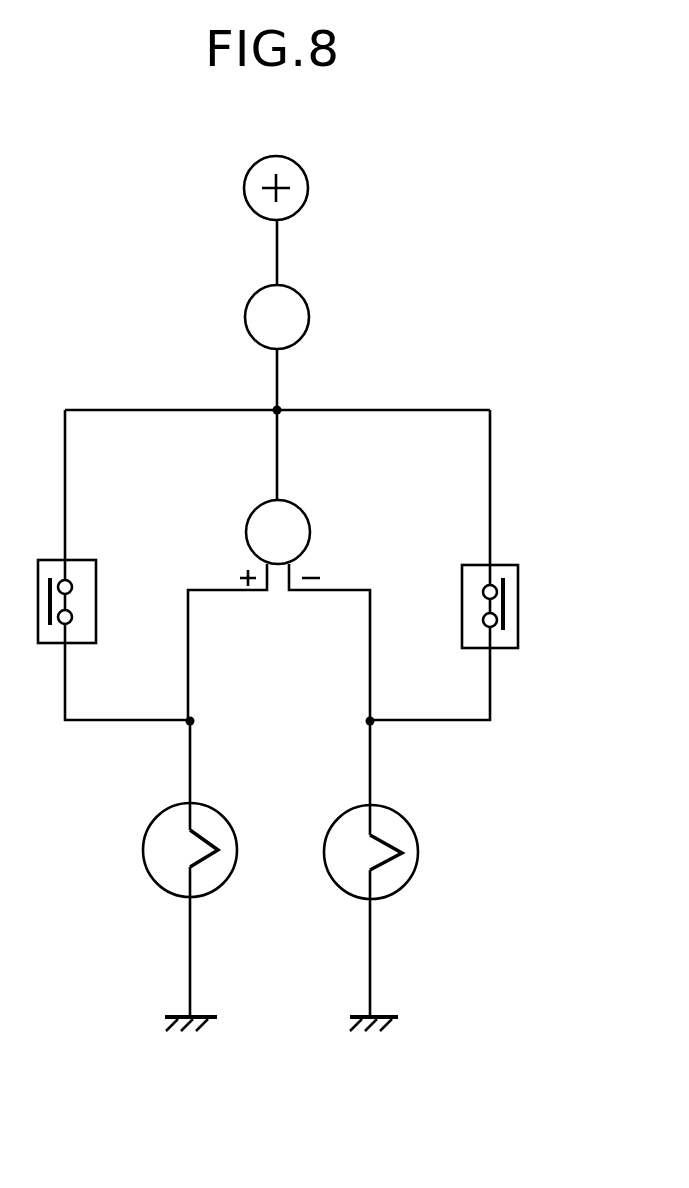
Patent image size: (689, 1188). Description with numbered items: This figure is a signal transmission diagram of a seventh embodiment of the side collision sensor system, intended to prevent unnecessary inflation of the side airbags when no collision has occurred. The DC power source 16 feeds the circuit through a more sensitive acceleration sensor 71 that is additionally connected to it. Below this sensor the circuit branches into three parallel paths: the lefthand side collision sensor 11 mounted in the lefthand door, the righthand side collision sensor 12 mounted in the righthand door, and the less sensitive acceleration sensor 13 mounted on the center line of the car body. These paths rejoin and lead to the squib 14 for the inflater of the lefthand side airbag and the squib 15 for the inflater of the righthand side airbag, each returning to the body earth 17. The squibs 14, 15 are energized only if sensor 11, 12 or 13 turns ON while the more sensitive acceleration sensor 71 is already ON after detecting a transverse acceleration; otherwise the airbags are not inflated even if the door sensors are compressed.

The DC power source 16 is at (300, 172).
The more sensitive acceleration sensor 71 is at (308, 318).
The acceleration sensor 13 is at (309, 518).
The lefthand side collision sensor 11 is at (88, 562).
The righthand side collision sensor 12 is at (510, 572).
The squib 14 is at (214, 820).
The squib 15 is at (396, 822).
The body earth 17 is at (200, 1015).